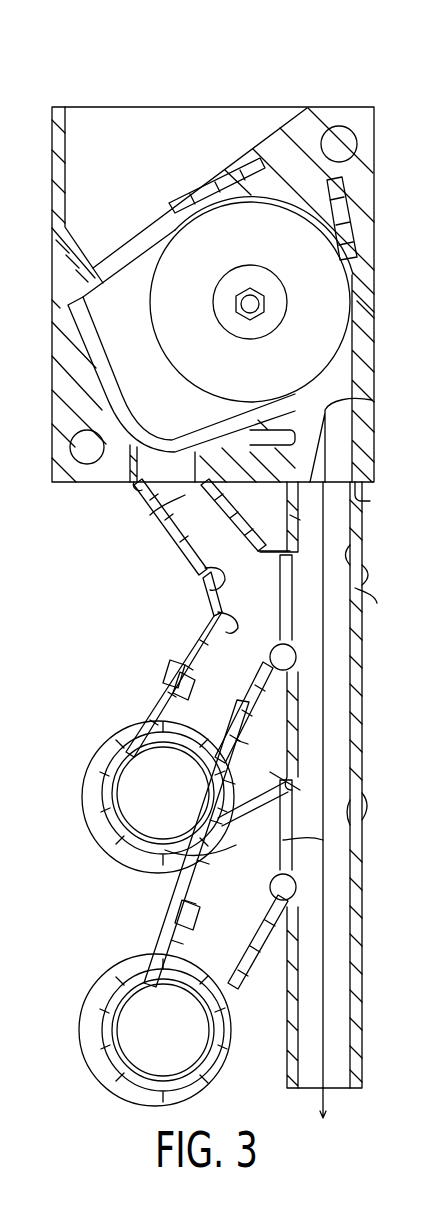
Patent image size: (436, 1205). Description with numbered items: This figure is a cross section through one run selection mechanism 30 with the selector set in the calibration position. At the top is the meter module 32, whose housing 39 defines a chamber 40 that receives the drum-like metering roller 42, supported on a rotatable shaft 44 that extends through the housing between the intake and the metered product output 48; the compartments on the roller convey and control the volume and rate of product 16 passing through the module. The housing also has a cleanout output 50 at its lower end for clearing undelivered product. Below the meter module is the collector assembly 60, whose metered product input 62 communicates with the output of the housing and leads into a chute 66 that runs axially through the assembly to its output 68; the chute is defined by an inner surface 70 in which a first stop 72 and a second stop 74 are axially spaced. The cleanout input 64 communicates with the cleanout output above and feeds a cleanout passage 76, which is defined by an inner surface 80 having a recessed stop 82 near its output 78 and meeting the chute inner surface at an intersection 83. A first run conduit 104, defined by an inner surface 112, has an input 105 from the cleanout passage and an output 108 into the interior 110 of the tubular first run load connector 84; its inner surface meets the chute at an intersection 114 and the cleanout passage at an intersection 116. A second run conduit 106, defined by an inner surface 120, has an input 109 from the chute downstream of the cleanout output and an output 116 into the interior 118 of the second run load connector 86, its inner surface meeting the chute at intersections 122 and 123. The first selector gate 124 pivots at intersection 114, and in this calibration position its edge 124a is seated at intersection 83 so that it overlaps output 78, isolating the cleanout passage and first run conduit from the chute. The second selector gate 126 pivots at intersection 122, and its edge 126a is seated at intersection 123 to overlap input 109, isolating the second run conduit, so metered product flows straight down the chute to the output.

The run selection mechanism 30 is at (347, 82).
The meter module 32 is at (128, 106).
The housing 39 is at (380, 190).
The chamber 40 is at (213, 294).
The metering roller 42 is at (370, 282).
The rotatable shaft 44 is at (258, 308).
The metered product output 48 is at (370, 501).
The cleanout output 50 is at (133, 490).
The collector assembly 60 is at (342, 785).
The metered product input 62 is at (352, 400).
The cleanout input 64 is at (78, 440).
The chute 66 is at (345, 700).
The output 68 is at (343, 1095).
The inner surface 70 is at (352, 551).
The first stop 72 is at (366, 582).
The second stop 74 is at (372, 818).
The cleanout passage 76 is at (170, 530).
The output 78 is at (280, 548).
The inner surface 80 is at (160, 514).
The recessed stop 82 is at (205, 572).
The intersection 83 is at (300, 520).
The first run load connector 84 is at (139, 780).
The second run load connector 86 is at (143, 1013).
The first run conduit 104 is at (172, 667).
The input 105 is at (222, 628).
The second run conduit 106 is at (168, 920).
The output 108 is at (150, 742).
The input 109 is at (300, 845).
The interior 110 is at (163, 793).
The inner surface 112 is at (185, 692).
The intersection 114 is at (320, 741).
The intersection / output 116 is at (215, 614).
The interior 118 is at (163, 1030).
The inner surface 120 is at (232, 850).
The intersection 122 is at (310, 920).
The intersection 123 is at (292, 772).
The first selector gate 124 is at (292, 640).
The edge 124a is at (365, 592).
The second selector gate 126 is at (330, 880).
The edge 126a is at (300, 790).
The product 16 is at (335, 1030).